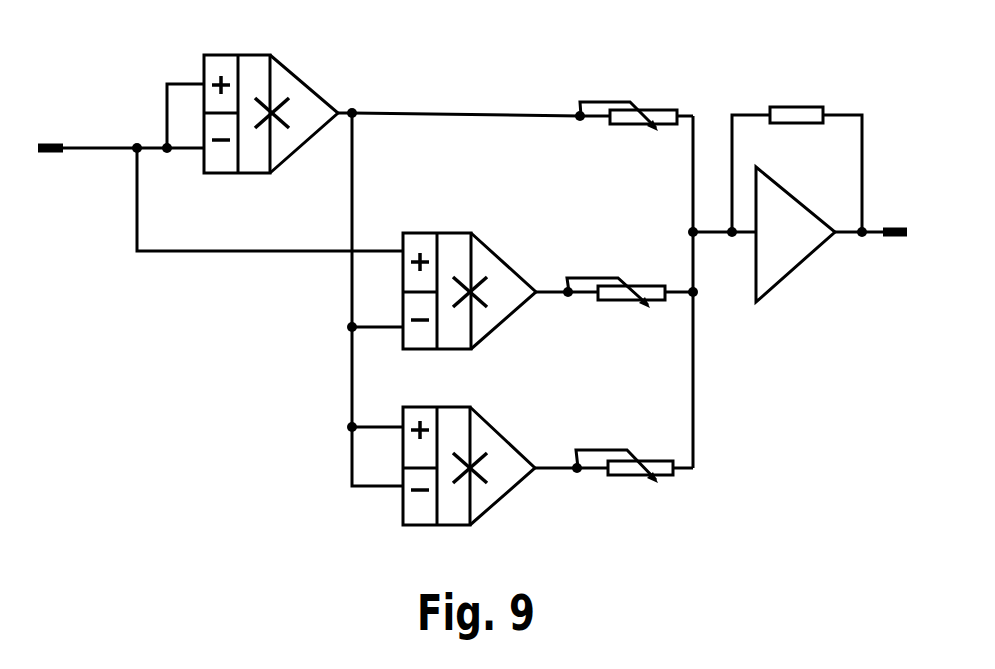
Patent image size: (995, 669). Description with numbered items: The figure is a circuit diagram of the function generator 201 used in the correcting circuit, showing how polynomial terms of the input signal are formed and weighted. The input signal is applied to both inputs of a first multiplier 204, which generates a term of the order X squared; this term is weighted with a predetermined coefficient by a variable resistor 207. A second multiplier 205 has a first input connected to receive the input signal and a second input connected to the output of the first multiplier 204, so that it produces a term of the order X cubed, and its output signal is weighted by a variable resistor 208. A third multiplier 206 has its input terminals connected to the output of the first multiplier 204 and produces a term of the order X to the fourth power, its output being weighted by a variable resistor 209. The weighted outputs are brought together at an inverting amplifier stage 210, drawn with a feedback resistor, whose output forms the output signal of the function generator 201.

The function generator 201 is at (215, 461).
The first multiplier 204 is at (271, 94).
The multiplier 205 is at (469, 271).
The third multiplier 206 is at (469, 451).
The variable resistor 207 is at (634, 98).
The variable resistor 208 is at (614, 275).
The variable resistor 209 is at (614, 448).
The operational amplifier 210 is at (800, 205).